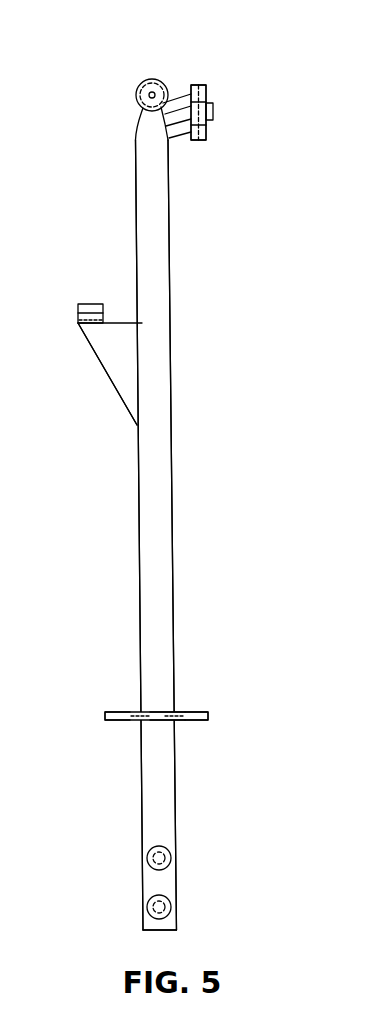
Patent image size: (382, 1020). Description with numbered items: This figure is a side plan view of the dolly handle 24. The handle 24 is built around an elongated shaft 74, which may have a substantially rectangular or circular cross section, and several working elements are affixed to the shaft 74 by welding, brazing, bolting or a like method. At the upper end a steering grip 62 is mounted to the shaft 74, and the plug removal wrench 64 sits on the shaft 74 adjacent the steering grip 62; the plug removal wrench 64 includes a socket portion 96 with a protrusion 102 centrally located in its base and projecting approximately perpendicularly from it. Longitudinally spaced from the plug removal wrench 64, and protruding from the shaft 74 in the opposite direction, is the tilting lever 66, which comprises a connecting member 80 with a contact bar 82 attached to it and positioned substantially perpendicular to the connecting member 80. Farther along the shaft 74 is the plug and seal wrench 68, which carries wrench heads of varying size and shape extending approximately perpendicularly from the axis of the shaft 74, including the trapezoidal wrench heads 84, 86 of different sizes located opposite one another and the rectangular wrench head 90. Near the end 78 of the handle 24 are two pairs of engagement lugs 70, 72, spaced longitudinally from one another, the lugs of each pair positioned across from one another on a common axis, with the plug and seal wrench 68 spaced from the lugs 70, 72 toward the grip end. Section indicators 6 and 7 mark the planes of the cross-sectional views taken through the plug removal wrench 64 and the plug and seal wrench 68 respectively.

The section line 6- 6 is at (83, 0).
The section line 7- 7 is at (112, 587).
The handle 24 is at (185, 325).
The steering grip 62 is at (148, 72).
The plug removal wrench 64 is at (221, 110).
The tilting lever 66 is at (90, 367).
The plug and seal wrench 68 is at (222, 708).
The engagement lugs 70 is at (171, 859).
The engagement lugs 72 is at (171, 905).
The elongated shaft 74 is at (158, 440).
The end of the handle 78 is at (160, 930).
The connecting member 80 is at (120, 378).
The contact bar 82 is at (93, 304).
The wrench head 84 is at (208, 721).
The wrench head 86 is at (105, 714).
The wrench head 90 is at (174, 721).
The socket portion 96 is at (198, 147).
The protrusion 102 is at (208, 123).